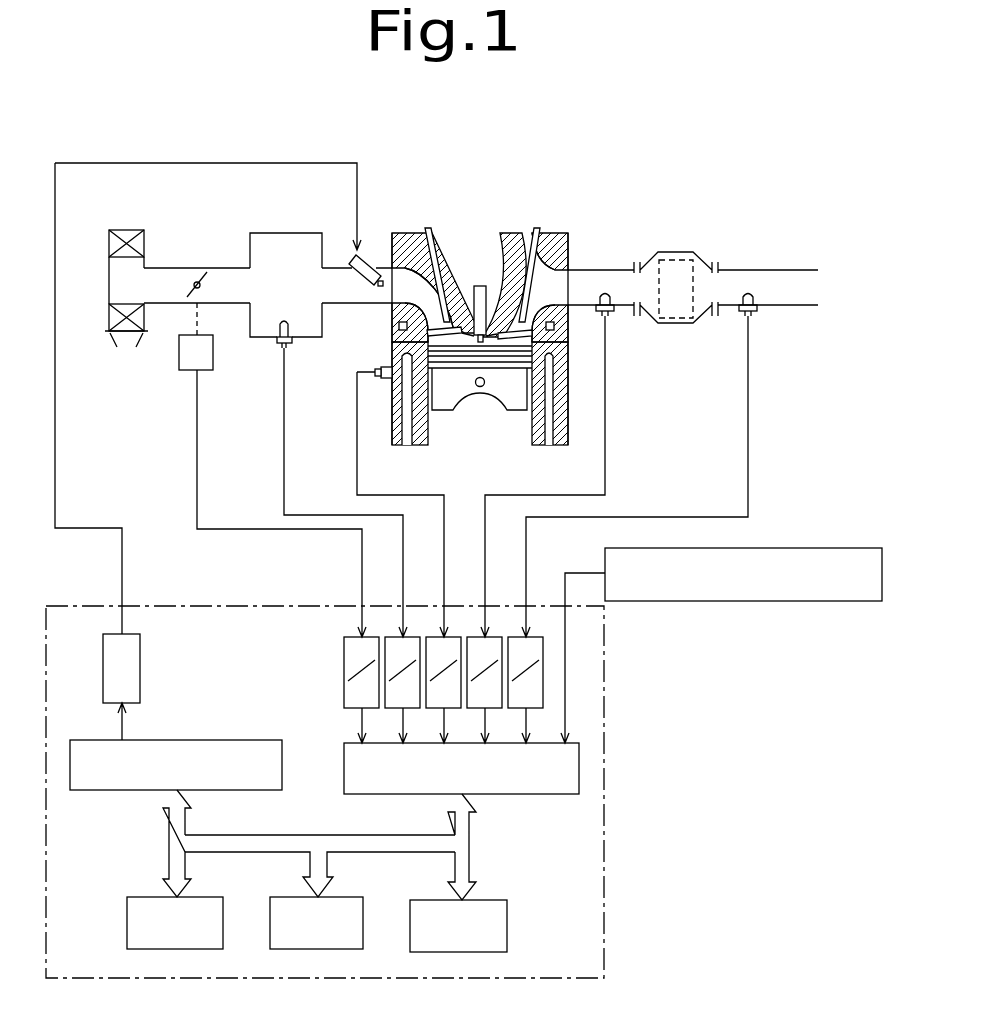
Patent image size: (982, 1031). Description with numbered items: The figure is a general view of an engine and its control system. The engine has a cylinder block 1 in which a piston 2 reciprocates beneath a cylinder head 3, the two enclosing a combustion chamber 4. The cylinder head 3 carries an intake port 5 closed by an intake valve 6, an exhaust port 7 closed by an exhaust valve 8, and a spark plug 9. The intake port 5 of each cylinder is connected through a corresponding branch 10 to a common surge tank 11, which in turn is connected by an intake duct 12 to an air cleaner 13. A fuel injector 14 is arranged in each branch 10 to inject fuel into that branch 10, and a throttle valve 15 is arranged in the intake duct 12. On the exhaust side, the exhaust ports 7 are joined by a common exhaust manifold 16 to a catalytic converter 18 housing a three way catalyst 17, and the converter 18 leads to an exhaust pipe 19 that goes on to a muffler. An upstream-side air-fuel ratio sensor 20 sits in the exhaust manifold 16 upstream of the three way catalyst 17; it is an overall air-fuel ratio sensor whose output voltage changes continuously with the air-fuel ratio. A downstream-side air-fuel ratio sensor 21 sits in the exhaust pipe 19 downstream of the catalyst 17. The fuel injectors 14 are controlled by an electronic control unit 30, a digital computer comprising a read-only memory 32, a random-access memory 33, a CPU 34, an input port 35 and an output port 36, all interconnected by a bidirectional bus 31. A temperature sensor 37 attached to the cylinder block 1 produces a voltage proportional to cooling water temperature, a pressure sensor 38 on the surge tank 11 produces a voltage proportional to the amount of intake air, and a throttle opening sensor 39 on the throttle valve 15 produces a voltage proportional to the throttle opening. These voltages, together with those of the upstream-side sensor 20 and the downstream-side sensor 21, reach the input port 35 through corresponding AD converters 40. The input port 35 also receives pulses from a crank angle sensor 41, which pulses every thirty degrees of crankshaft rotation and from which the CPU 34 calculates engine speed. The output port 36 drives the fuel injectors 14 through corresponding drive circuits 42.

The cylinder block 1 is at (568, 425).
The piston 2 is at (510, 404).
The cylinder head 3 is at (450, 288).
The combustion chamber 4 is at (523, 345).
The intake port 5 is at (406, 262).
The intake valve 6 is at (431, 244).
The exhaust port 7 is at (552, 265).
The exhaust valve 8 is at (534, 244).
The spark plug 9 is at (484, 286).
The branch 10 is at (358, 304).
The surge tank 11 is at (295, 233).
The intake duct 12 is at (228, 268).
The air cleaner 13 is at (127, 230).
The fuel injector 14 is at (372, 256).
The throttle valve 15 is at (190, 292).
The exhaust manifold 16 is at (612, 270).
The three way catalyst 17 is at (669, 253).
The catalytic converter 18 is at (706, 267).
The exhaust pipe 19 is at (782, 270).
The upstream-side air-fuel ratio sensor 20 is at (613, 318).
The downstream-side air-fuel ratio sensor 21 is at (757, 318).
The electronic control unit 30 is at (285, 605).
The bidirectional bus 31 is at (469, 848).
The read-only memory 32 is at (127, 920).
The random-access memory 33 is at (363, 922).
The CPU 34 is at (507, 930).
The input port 35 is at (540, 794).
The output port 36 is at (110, 790).
The temperature sensor 37 is at (383, 378).
The pressure sensor 38 is at (280, 346).
The throttle opening sensor 39 is at (183, 373).
The AD converter 40 is at (392, 637).
The crank angle sensor 41 is at (785, 548).
The drive circuit 42 is at (140, 670).